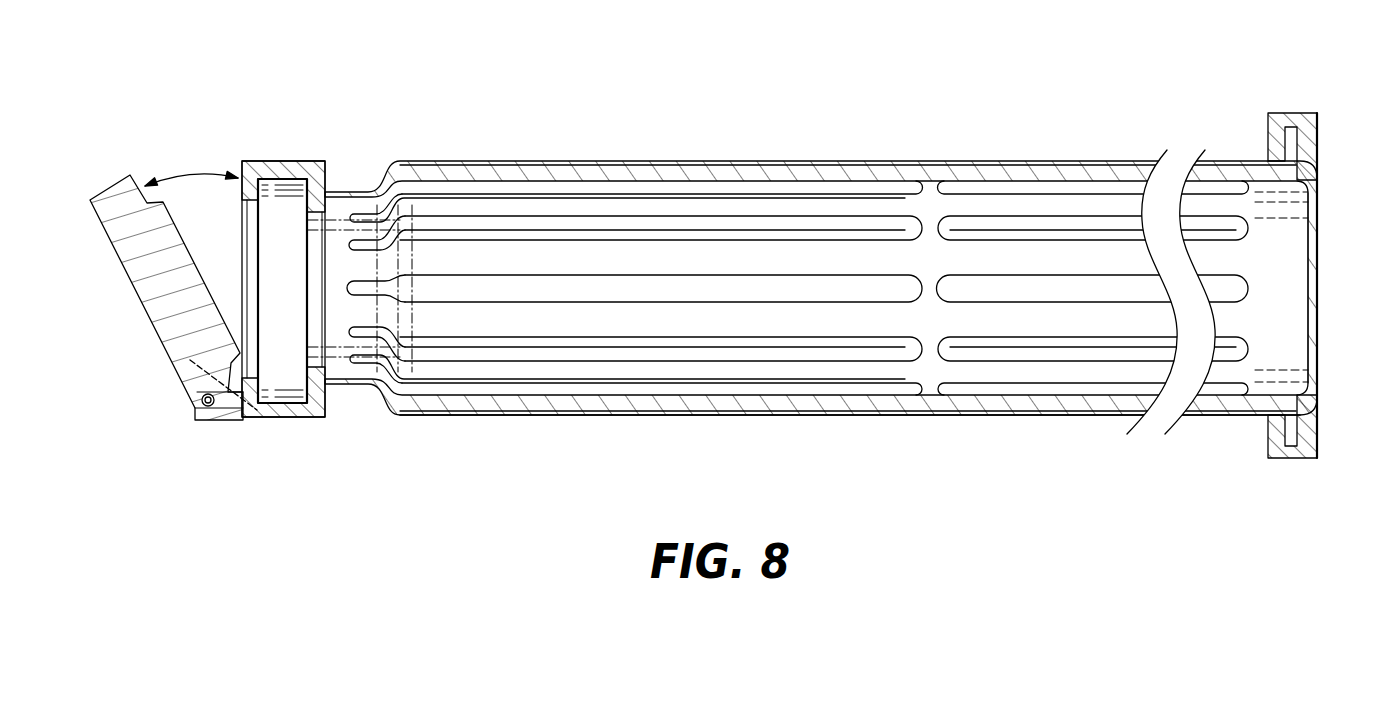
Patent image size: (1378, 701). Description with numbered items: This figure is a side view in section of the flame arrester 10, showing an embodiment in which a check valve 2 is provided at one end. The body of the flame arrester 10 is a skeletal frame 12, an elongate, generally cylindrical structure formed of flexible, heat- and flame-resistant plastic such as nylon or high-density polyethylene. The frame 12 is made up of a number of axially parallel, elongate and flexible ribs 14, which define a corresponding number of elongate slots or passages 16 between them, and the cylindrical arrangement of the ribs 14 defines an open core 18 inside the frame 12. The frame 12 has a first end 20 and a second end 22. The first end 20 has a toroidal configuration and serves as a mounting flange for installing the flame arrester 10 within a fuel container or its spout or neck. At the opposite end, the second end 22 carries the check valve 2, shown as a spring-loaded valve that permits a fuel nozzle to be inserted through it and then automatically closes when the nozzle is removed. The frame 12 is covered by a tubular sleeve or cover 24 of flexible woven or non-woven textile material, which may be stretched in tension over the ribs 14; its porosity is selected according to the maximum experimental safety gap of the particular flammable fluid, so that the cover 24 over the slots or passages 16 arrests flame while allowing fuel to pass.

The check valve 2 is at (102, 190).
The flame arrester 10 is at (802, 296).
The skeletal frame 12 is at (864, 161).
The ribs 14 is at (1012, 302).
The slots or passages 16 is at (556, 291).
The open core 18 is at (1282, 318).
The first end 20 is at (1281, 113).
The second end 22 is at (306, 161).
The tubular sleeve or cover 24 is at (1077, 416).